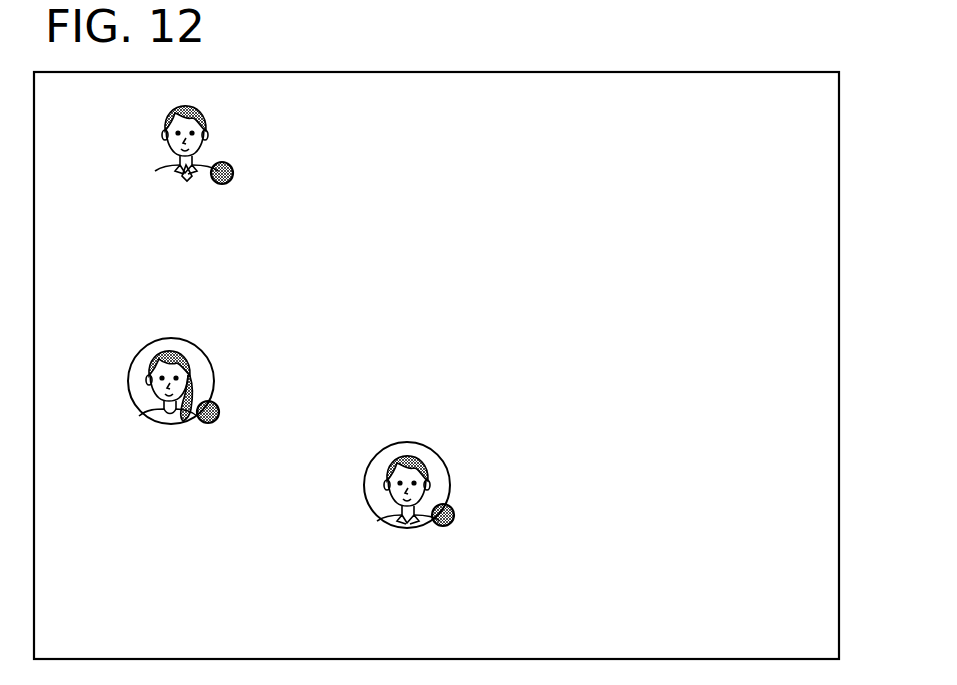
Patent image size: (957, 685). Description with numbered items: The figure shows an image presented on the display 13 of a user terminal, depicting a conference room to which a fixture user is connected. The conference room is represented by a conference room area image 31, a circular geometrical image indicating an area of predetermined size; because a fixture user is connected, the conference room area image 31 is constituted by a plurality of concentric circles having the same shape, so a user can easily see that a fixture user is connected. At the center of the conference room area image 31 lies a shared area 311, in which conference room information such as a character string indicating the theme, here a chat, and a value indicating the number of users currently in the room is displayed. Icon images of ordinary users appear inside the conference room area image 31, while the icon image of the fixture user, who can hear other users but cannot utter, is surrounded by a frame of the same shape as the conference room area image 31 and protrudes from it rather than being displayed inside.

The display 13 is at (868, 130).
The conference room area image 31 is at (465, 193).
The shared area 311 is at (282, 400).